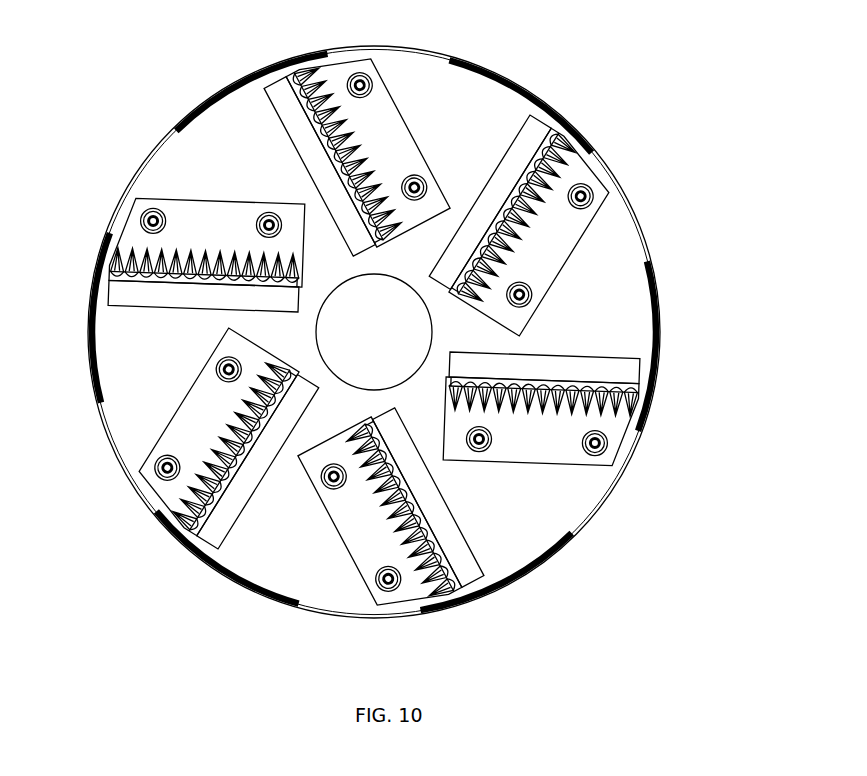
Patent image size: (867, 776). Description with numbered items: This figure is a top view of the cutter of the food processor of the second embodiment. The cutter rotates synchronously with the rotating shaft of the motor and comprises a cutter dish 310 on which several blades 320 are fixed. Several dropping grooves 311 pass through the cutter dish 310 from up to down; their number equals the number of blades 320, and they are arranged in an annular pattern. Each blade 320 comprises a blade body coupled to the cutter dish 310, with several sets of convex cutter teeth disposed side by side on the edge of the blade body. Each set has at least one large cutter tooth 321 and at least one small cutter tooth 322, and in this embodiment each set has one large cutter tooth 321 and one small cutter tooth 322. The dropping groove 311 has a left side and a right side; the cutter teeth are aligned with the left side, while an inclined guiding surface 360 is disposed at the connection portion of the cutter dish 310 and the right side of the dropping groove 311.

The cutter dish 310 is at (532, 522).
The blade 320 is at (572, 442).
The inclined guiding surface 360 is at (552, 368).
The dropping groove 311 is at (582, 387).
The small cutter tooth 322 is at (615, 392).
The large cutter tooth 321 is at (633, 397).